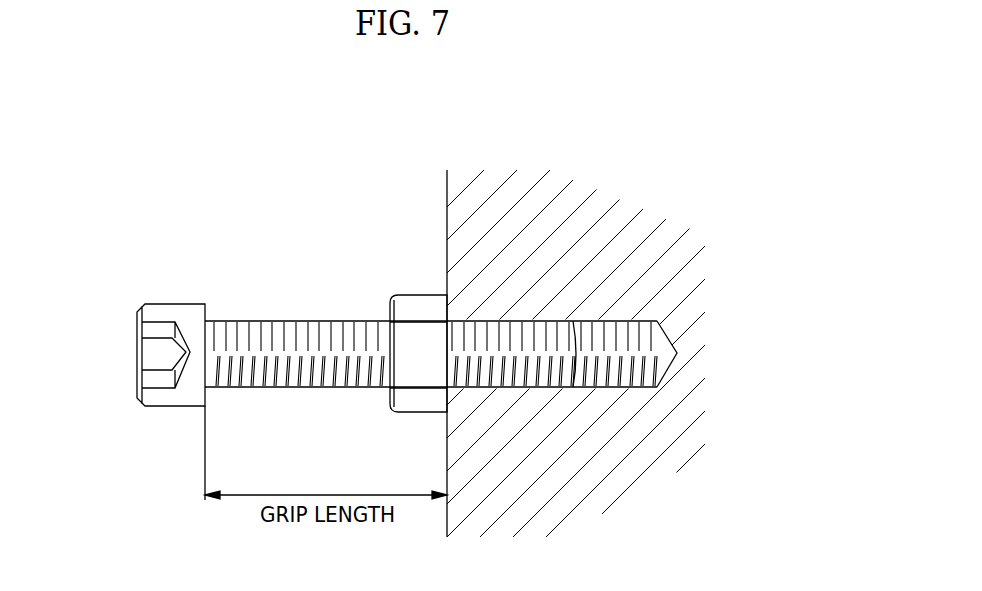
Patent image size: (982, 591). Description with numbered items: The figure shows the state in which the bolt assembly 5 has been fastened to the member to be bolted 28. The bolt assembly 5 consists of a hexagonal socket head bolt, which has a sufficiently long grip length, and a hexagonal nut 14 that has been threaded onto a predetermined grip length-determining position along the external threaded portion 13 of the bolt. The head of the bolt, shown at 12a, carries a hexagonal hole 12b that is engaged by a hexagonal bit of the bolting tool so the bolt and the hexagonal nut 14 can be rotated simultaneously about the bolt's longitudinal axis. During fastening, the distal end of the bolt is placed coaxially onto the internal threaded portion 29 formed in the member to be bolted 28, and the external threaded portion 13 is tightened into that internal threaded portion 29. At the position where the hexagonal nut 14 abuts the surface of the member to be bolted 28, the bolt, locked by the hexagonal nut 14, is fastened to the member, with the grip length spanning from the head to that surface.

The bolt assembly 5 is at (80, 196).
The bolt head 12a is at (168, 304).
The hexagonal hole 12b is at (138, 380).
The external threaded portion 13 is at (313, 321).
The hexagonal nut 14 is at (412, 308).
The member to be bolted 28 is at (447, 182).
The internal threaded portion 29 is at (600, 386).